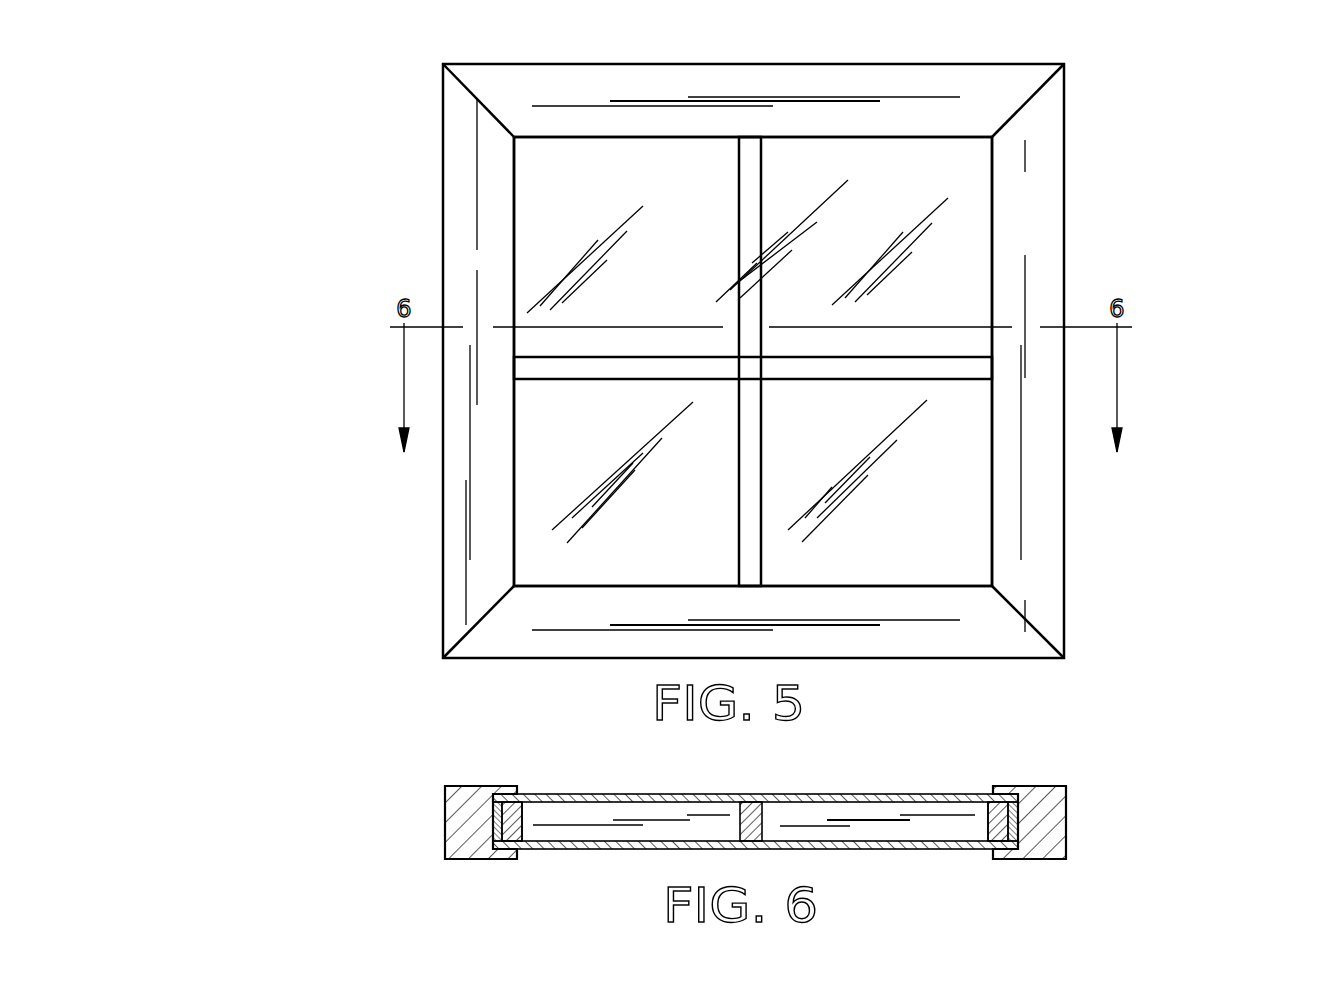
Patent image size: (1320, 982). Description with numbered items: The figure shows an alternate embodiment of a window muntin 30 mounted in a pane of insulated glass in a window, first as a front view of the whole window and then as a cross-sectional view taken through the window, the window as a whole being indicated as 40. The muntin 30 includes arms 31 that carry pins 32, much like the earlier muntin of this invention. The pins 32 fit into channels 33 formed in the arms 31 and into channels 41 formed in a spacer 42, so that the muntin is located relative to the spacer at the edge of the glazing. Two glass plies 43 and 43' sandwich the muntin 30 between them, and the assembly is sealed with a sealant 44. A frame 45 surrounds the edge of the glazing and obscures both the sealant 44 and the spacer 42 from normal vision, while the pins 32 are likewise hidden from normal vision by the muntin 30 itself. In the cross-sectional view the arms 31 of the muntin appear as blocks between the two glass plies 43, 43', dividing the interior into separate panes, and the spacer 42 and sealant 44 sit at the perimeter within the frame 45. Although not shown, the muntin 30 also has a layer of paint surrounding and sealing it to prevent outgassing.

In FIG. 5, the window muntin 30 is at (775, 361).
In FIG. 6, the window muntin 30 is at (765, 811).
In FIG. 5, the arms 31 is at (745, 160).
In FIG. 6, the arms 31 is at (672, 815).
In FIG. 6, the pins 32 is at (520, 849).
In FIG. 6, the channels 33 is at (528, 828).
In FIG. 5, the window assembly 40 is at (859, 355).
In FIG. 6, the window assembly 40 is at (778, 805).
In FIG. 6, the channels 41 is at (490, 858).
In FIG. 6, the spacer 42 is at (517, 800).
In FIG. 5, the glass ply 43 is at (782, 361).
In FIG. 6, the glass ply 43 is at (755, 778).
In FIG. 6, the glass ply 43' is at (755, 872).
In FIG. 6, the sealant 44 is at (497, 798).
In FIG. 5, the frame 45 is at (1052, 558).
In FIG. 6, the frame 45 is at (715, 821).